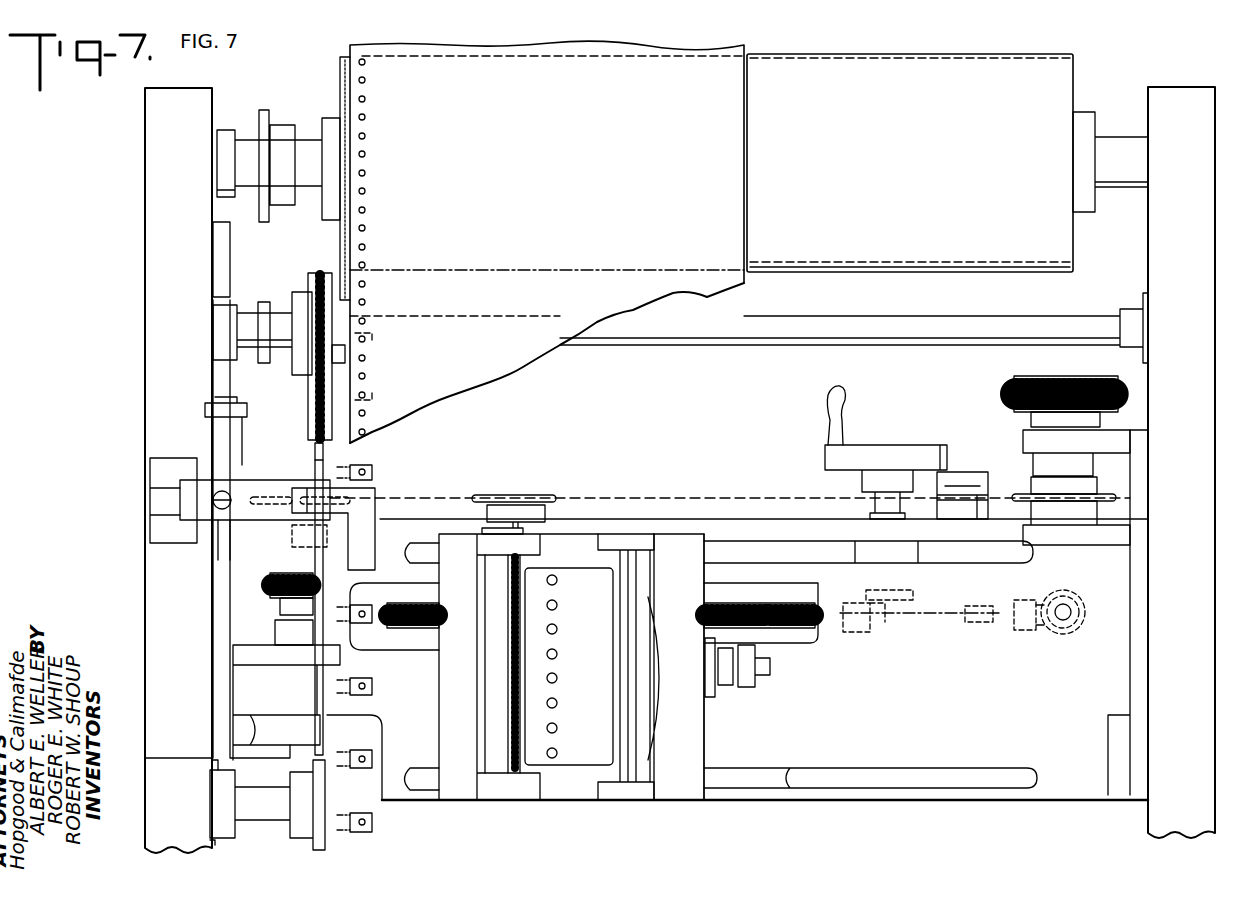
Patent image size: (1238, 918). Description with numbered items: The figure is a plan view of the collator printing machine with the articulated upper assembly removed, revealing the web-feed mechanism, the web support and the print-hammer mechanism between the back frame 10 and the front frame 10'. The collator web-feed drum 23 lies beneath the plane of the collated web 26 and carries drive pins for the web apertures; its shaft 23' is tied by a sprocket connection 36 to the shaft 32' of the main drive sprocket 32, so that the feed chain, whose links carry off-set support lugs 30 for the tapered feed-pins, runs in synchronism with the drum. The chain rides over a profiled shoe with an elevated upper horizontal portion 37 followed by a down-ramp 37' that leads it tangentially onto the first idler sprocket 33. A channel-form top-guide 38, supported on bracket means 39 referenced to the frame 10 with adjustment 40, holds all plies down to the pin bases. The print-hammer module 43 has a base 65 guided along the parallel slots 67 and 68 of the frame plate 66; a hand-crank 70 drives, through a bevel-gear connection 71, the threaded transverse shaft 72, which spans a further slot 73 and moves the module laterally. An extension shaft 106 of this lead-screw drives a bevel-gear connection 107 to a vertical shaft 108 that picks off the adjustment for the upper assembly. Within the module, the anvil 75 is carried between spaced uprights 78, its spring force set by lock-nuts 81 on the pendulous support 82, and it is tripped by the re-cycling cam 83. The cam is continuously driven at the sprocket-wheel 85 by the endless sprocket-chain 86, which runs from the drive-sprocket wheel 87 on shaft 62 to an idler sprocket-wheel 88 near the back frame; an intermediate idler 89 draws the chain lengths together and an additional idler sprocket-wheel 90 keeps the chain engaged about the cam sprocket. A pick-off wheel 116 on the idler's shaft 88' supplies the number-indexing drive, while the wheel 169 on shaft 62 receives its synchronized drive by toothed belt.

The frame 10 is at (156, 470).
The front frame 10' is at (1161, 442).
The collator web-feed drum 23 is at (711, 242).
The drum shaft 23' is at (682, 147).
The collated web 26 is at (512, 370).
The off-set support lug 30 is at (377, 404).
The main drive sprocket 32 is at (304, 345).
The sprocket shaft 32' is at (854, 340).
The first idler sprocket 33 is at (326, 800).
The sprocket connection 36 is at (265, 253).
The upper horizontal portion of shoe 37 is at (351, 451).
The down-ramp 37' is at (292, 607).
The top-guide 38 is at (375, 510).
The bracket means 39 is at (256, 482).
The adjustment 40 is at (218, 512).
The print-hammer module 43 is at (664, 752).
The shaft 62 is at (1082, 470).
The base 65 is at (706, 742).
The plate 66 is at (866, 709).
The guide slot 67 is at (790, 775).
The guide slot 68 is at (945, 553).
The hand-crank 70 is at (873, 445).
The bevel-gear connection 71 is at (882, 615).
The transverse shaft 72 is at (762, 640).
The elongated slot 73 is at (780, 590).
The anvil 75 is at (510, 662).
The uprights 78 is at (480, 556).
The lock-nuts 81 is at (748, 688).
The pendulous support 82 is at (645, 575).
The re-cycling cam 83 is at (487, 626).
The print-hammer cam sprocket-wheel 85 is at (494, 505).
The endless sprocket-chain 86 is at (702, 498).
The drive-sprocket wheel 87 is at (1072, 502).
The idler sprocket-wheel 88 is at (276, 474).
The sprocket shaft 88' is at (279, 537).
The intermediate idler 89 is at (960, 487).
The additional idler sprocket-wheel 90 is at (528, 503).
The shaft 106 is at (975, 625).
The bevel-gear connection 107 is at (1049, 648).
The vertical shaft 108 is at (1068, 608).
The pick-off wheel 116 is at (270, 585).
The wheel 169 is at (1055, 374).